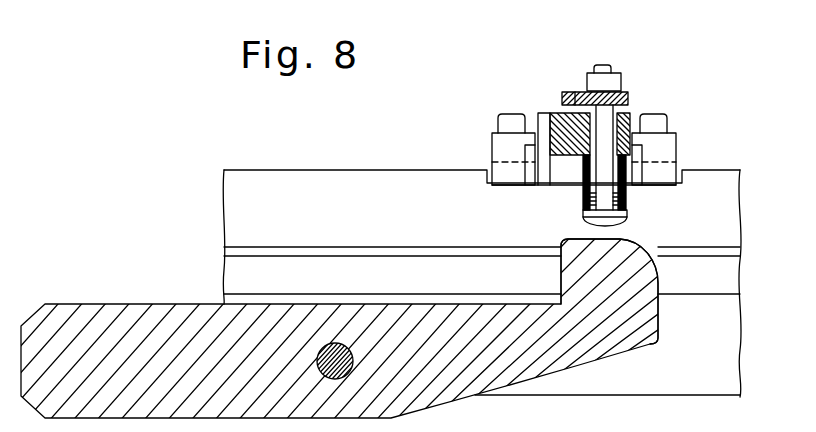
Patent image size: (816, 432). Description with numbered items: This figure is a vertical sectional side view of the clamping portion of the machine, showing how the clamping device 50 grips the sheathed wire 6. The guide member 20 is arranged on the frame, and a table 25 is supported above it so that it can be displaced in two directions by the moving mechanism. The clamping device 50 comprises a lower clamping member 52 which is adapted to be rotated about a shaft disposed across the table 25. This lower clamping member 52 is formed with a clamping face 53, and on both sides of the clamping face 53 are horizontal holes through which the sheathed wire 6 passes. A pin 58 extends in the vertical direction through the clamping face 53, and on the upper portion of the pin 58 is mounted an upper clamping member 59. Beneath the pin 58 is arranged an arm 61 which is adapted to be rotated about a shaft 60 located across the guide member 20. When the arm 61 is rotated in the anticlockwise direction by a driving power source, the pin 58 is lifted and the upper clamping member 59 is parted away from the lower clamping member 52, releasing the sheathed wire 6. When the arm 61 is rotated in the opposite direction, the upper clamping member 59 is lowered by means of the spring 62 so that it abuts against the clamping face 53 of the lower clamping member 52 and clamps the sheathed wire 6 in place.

The sheathed wire 6 is at (572, 93).
The guide member 20 is at (718, 347).
The table 25 is at (733, 188).
The clamping device 50 is at (626, 75).
The lower clamping member 52 is at (525, 107).
The clamping face 53 is at (553, 112).
The pin 58 is at (627, 108).
The upper clamping member 59 is at (566, 93).
The shaft 60 is at (335, 343).
The arm 61 is at (640, 327).
The spring 62 is at (583, 196).